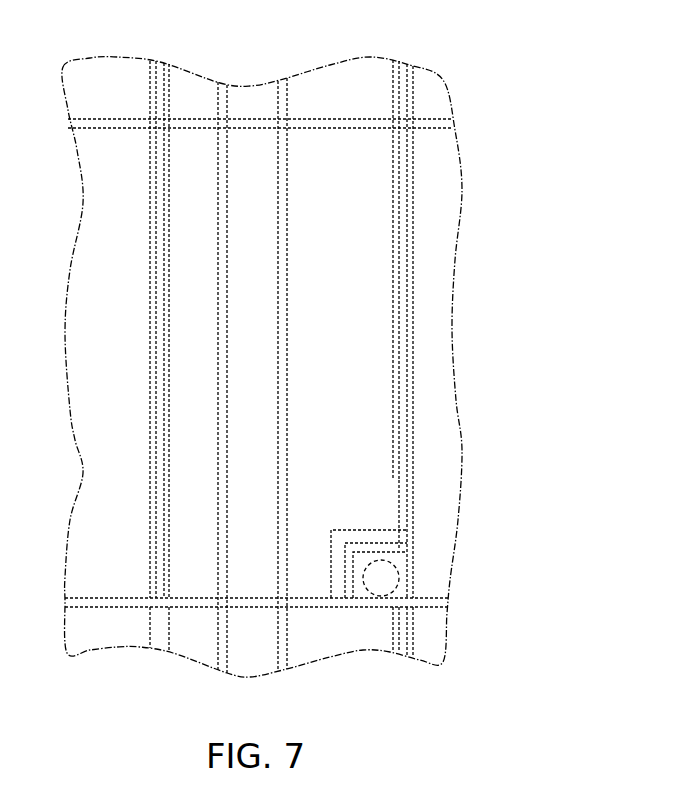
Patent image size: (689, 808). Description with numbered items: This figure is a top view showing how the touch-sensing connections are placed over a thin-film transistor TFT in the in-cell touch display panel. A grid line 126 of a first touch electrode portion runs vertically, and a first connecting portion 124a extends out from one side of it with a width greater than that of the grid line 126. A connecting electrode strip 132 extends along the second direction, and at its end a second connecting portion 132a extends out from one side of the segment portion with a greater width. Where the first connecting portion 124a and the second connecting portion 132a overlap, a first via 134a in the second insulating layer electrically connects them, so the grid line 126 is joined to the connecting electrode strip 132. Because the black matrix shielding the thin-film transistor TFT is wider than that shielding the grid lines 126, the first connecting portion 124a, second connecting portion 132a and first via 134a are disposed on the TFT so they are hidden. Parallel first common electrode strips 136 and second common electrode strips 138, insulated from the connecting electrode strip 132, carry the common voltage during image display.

The first common electrode strip 136 is at (223, 90).
The grid line 126 is at (403, 187).
The second common electrode strip 138 is at (412, 227).
The connecting electrode strip 132 is at (407, 627).
The thin-film transistor TFT is at (426, 540).
The second connecting portion 132a is at (385, 548).
The first connecting portion 124a is at (392, 560).
The first via 134a is at (398, 585).